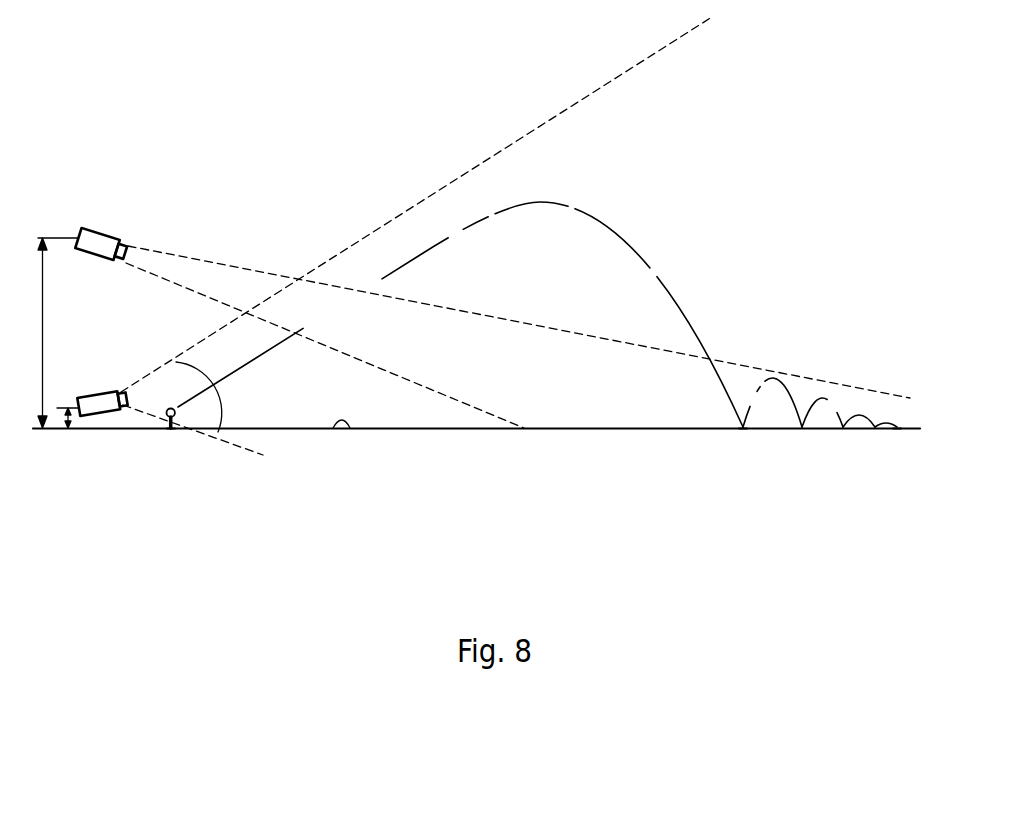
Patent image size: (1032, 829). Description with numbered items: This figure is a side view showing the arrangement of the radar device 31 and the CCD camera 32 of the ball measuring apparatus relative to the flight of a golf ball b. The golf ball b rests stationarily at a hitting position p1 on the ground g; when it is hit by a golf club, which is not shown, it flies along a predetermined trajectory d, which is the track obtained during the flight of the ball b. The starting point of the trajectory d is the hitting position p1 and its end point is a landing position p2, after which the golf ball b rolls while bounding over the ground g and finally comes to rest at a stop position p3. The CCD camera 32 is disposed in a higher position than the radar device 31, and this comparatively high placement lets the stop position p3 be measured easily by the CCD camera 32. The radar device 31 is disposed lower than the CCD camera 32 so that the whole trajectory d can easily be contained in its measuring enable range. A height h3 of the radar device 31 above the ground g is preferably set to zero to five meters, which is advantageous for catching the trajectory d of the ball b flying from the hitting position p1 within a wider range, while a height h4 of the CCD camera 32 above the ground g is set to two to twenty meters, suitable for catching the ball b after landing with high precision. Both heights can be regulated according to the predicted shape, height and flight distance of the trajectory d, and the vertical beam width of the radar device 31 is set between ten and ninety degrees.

The CCD camera 32 is at (97, 243).
The radar device 31 is at (98, 402).
The height of the CCD camera h4 is at (58, 333).
The height of the radar device h3 is at (63, 423).
The golf ball b is at (167, 407).
The hitting position p1 is at (168, 430).
The ground g is at (332, 430).
The trajectory d is at (568, 208).
The landing position p2 is at (742, 430).
The stop position p3 is at (894, 430).